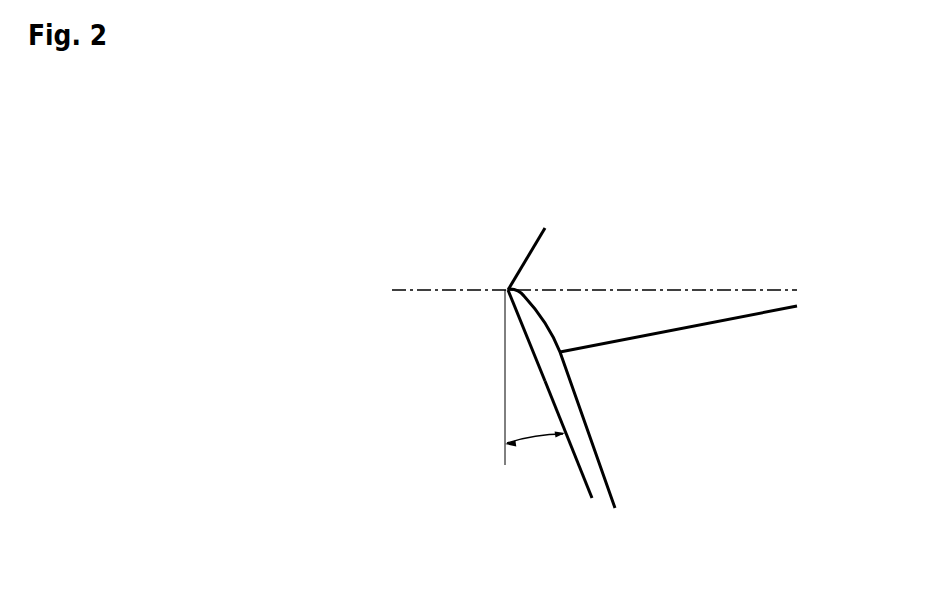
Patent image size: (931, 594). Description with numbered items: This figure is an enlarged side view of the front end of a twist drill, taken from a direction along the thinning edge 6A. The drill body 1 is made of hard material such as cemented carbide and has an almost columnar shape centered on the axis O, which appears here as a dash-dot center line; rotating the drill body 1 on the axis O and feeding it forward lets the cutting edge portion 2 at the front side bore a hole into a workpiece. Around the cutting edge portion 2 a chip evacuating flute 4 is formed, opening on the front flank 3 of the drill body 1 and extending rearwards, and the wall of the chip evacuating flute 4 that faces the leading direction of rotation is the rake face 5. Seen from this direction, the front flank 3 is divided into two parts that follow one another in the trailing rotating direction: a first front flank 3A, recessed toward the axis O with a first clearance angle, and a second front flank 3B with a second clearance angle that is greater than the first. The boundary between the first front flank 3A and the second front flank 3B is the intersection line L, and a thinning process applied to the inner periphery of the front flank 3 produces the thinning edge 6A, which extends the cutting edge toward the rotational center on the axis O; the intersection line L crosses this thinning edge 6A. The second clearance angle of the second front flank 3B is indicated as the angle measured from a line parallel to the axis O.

The drill body 1 is at (488, 345).
The cutting edge portion 2 is at (488, 345).
The front flank 3 is at (488, 428).
The first front flank 3A is at (535, 337).
The second front flank 3B is at (545, 382).
The chip evacuating flute 4 is at (670, 232).
The rake face 5 is at (625, 458).
The thinning edge 6A is at (508, 287).
The axis O is at (737, 290).
The intersection line L is at (578, 462).